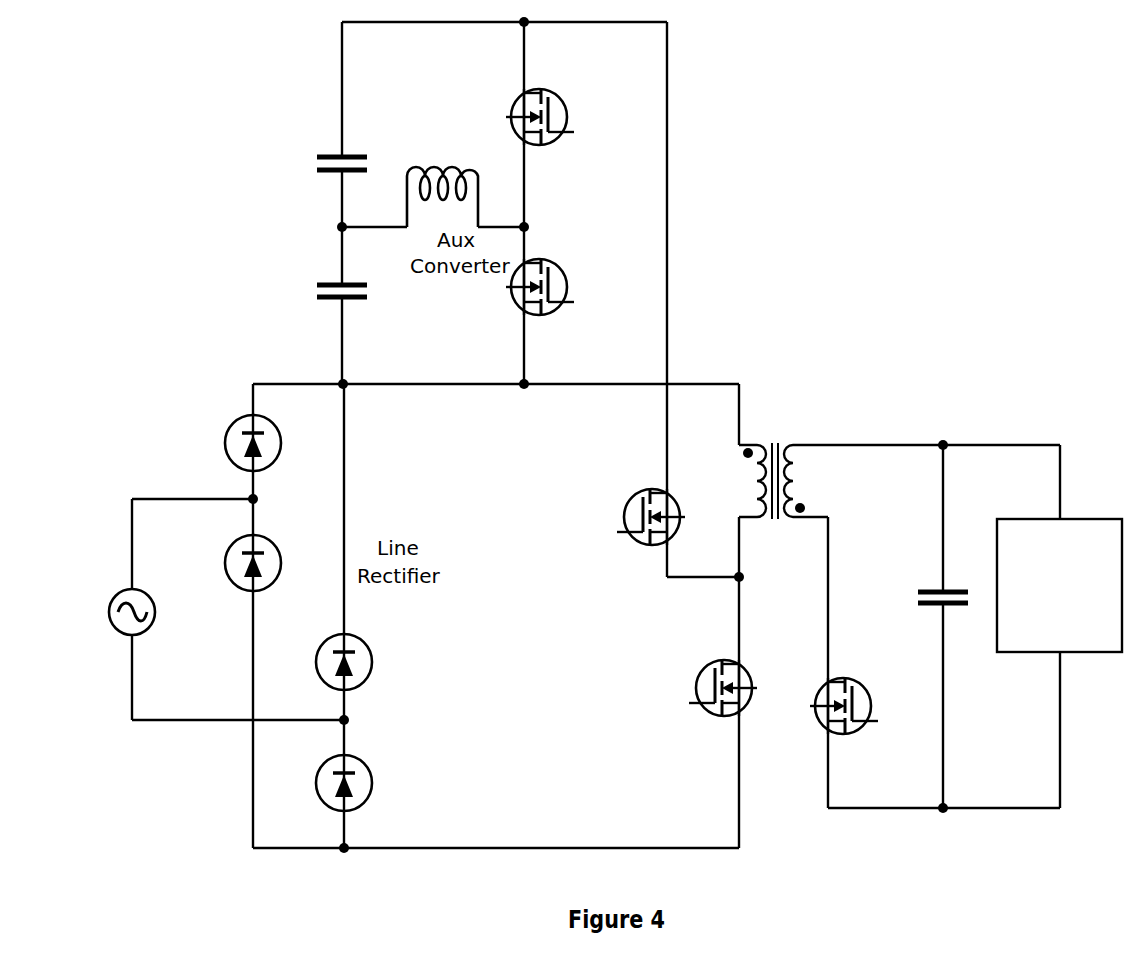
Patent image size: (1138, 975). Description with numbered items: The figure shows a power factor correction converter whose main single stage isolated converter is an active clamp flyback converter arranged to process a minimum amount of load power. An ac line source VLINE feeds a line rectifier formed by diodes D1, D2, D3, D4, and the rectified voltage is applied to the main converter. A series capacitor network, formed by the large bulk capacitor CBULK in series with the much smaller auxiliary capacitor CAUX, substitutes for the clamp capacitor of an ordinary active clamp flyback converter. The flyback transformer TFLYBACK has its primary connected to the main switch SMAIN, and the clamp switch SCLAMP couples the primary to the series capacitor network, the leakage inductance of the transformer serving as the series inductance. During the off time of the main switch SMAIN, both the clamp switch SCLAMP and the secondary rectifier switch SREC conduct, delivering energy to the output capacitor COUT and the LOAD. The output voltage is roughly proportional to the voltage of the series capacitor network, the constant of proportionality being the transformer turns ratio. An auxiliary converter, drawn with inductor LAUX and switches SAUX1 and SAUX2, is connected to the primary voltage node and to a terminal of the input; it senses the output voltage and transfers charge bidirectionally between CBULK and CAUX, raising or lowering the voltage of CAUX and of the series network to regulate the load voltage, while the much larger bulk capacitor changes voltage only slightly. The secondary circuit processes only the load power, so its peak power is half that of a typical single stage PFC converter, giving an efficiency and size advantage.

The bulk capacitor CBULK is at (313, 170).
The auxiliary capacitor CAUX is at (317, 295).
The auxiliary converter inductor LAUX is at (442, 182).
The first auxiliary converter switch SAUX1 is at (540, 104).
The second auxiliary converter switch SAUX2 is at (540, 276).
The rectifier diode D1 is at (269, 443).
The rectifier diode D2 is at (269, 563).
The rectifier diode D3 is at (359, 662).
The rectifier diode D4 is at (359, 783).
The ac line voltage source VLINE is at (134, 599).
The clamp switch SCLAMP is at (651, 504).
The flyback transformer TFLYBACK is at (772, 472).
The main switch SMAIN is at (723, 675).
The secondary rectifier switch SREC is at (845, 693).
The output capacitor COUT is at (917, 602).
The load LOAD is at (1059, 585).